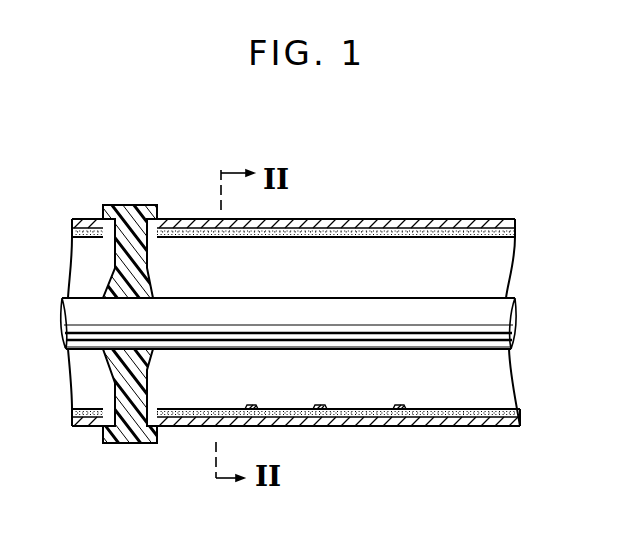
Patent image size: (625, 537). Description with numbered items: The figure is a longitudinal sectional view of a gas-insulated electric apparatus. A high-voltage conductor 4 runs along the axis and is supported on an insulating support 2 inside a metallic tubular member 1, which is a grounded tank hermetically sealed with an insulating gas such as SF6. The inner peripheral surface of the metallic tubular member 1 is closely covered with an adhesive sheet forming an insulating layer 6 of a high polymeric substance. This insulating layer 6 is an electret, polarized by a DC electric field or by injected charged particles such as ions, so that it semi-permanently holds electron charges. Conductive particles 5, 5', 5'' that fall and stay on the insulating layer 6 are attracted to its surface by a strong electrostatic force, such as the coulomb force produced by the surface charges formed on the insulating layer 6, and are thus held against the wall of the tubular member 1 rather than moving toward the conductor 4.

The metallic tubular member 1 is at (358, 219).
The insulating support 2 is at (150, 292).
The high-voltage conductor 4 is at (411, 298).
The conductive particle 5 is at (264, 386).
The conductive particle 5' is at (337, 386).
The conductive particle 5'' is at (416, 386).
The insulating layer 6 is at (450, 232).